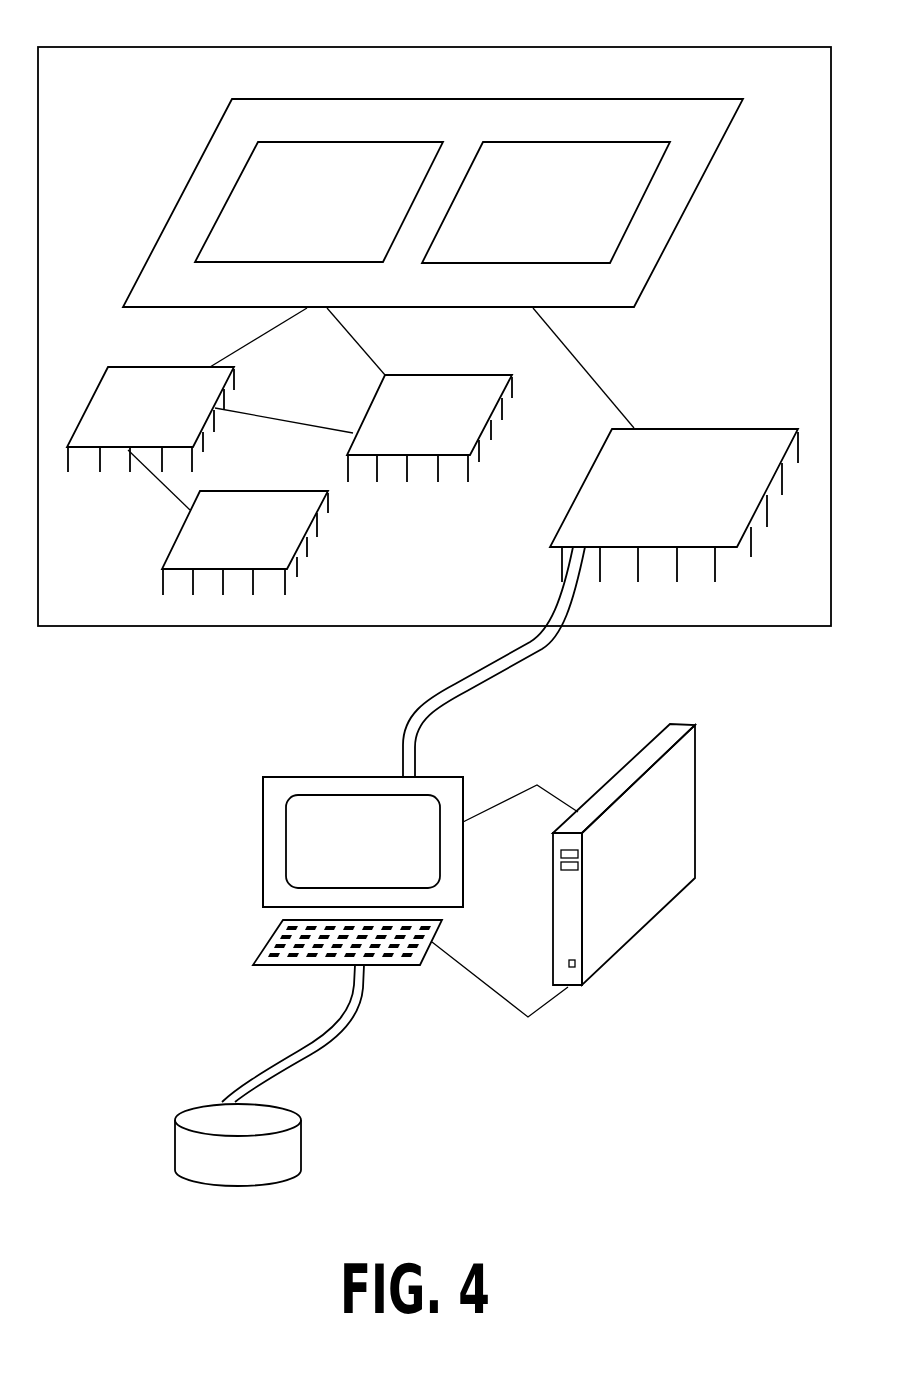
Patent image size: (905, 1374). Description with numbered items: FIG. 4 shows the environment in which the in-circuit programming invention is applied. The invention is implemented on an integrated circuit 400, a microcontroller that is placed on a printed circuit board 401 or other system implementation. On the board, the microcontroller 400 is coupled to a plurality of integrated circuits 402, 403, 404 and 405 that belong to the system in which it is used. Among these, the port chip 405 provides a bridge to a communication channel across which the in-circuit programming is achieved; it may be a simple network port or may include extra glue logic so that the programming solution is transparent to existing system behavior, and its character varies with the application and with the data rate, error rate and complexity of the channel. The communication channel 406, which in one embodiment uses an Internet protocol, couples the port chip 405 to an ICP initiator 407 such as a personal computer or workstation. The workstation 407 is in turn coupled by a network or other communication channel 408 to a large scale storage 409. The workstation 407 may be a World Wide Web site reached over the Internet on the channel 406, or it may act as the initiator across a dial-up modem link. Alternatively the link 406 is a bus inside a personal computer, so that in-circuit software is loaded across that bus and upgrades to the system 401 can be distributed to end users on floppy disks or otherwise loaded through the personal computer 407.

The integrated circuit 400 is at (272, 131).
The printed circuit board 401 is at (591, 47).
The integrated circuit 402 is at (135, 418).
The integrated circuit 403 is at (412, 426).
The integrated circuit 404 is at (228, 543).
The port chip 405 is at (657, 507).
The communication channel 406 is at (450, 690).
The ICP initiator 407 is at (624, 867).
The communication channel 408 is at (338, 1032).
The large scale storage 409 is at (222, 1170).